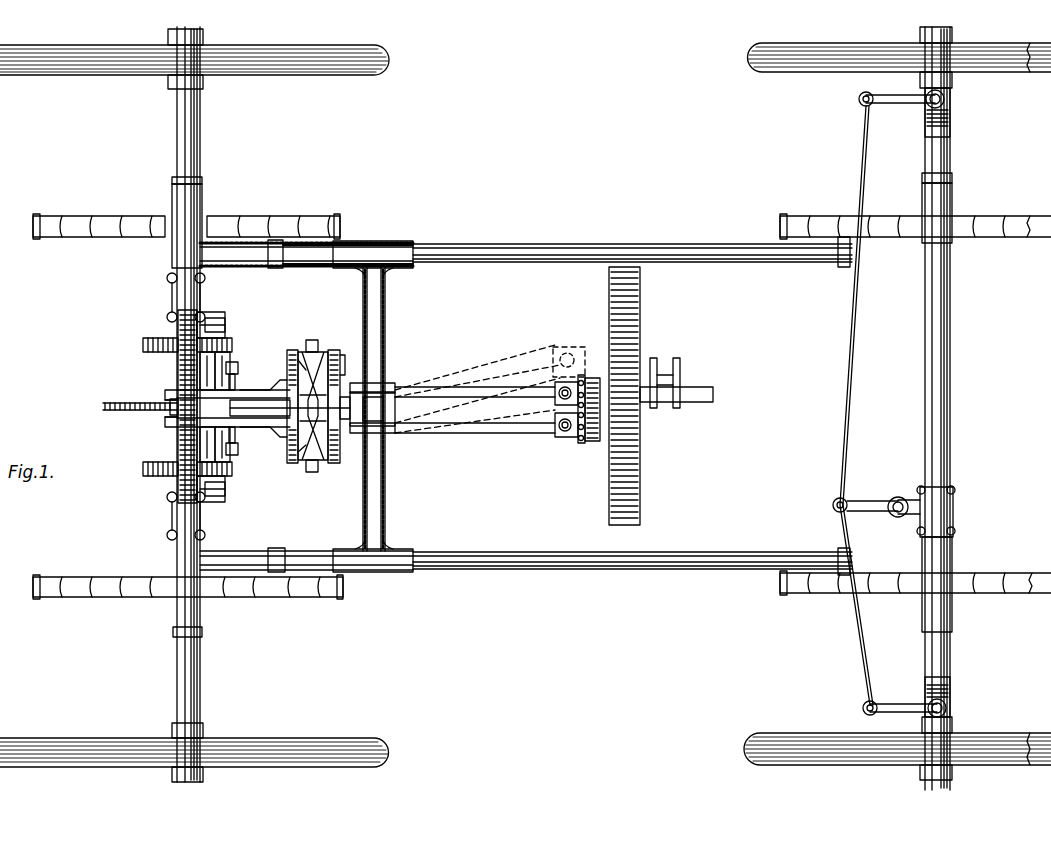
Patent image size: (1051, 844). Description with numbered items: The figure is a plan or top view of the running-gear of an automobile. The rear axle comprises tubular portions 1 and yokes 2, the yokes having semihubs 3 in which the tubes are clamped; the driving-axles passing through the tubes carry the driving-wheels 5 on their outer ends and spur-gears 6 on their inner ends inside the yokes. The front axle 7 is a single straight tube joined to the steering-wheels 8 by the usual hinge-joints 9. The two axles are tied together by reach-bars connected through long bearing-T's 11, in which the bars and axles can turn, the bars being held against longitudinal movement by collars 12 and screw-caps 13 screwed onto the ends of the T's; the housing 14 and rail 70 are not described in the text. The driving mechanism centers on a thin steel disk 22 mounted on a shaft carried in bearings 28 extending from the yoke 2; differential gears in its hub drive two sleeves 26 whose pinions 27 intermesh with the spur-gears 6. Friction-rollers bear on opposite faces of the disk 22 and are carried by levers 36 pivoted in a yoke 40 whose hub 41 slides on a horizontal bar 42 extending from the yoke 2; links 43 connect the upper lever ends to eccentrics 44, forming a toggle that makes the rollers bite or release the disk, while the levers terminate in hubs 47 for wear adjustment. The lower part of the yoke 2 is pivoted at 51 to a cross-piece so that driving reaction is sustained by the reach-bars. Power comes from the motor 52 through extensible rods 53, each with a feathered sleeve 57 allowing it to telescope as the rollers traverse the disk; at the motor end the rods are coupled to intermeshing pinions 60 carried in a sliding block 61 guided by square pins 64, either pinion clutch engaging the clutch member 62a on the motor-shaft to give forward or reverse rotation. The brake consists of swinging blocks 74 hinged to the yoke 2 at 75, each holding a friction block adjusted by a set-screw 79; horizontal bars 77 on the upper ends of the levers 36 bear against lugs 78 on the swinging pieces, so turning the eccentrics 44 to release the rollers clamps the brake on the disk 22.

The tubular portions 1 is at (176, 132).
The yokes 2 is at (183, 440).
The semihubs 3 is at (170, 294).
The driving-wheels 5 is at (78, 44).
The spur-gears 6 is at (152, 338).
The front axle 7 is at (951, 360).
The steering-wheels 8 is at (874, 43).
The hinge-joints 9 is at (945, 100).
The bearing-T's 11 is at (176, 252).
The collars 12 is at (290, 262).
The screw-caps 13 is at (274, 268).
The axle housing 14 is at (951, 551).
The disk 22 is at (112, 403).
The sleeves 26 is at (202, 372).
The pinions 27 is at (232, 340).
The bearings 28 is at (226, 320).
The levers 36 is at (318, 350).
The yoke 40 is at (289, 352).
The hub 41 is at (284, 430).
The horizontal bar 42 is at (176, 420).
The links 43 is at (335, 380).
The eccentrics 44 is at (290, 450).
The hubs 47 is at (310, 345).
The pivot 51 is at (398, 400).
The motor 52 is at (641, 437).
The extensible rods 53 is at (465, 387).
The sleeve 57 is at (380, 383).
The pinions 60 is at (593, 378).
The block 61 is at (582, 445).
The clutch member 62a is at (602, 393).
The square pins 64 is at (560, 382).
The frame rail 70 is at (590, 244).
The swinging blocks 74 is at (242, 392).
The hinge 75 is at (168, 392).
The horizontal bars 77 is at (285, 380).
The lugs 78 is at (278, 388).
The set-screw 79 is at (230, 362).